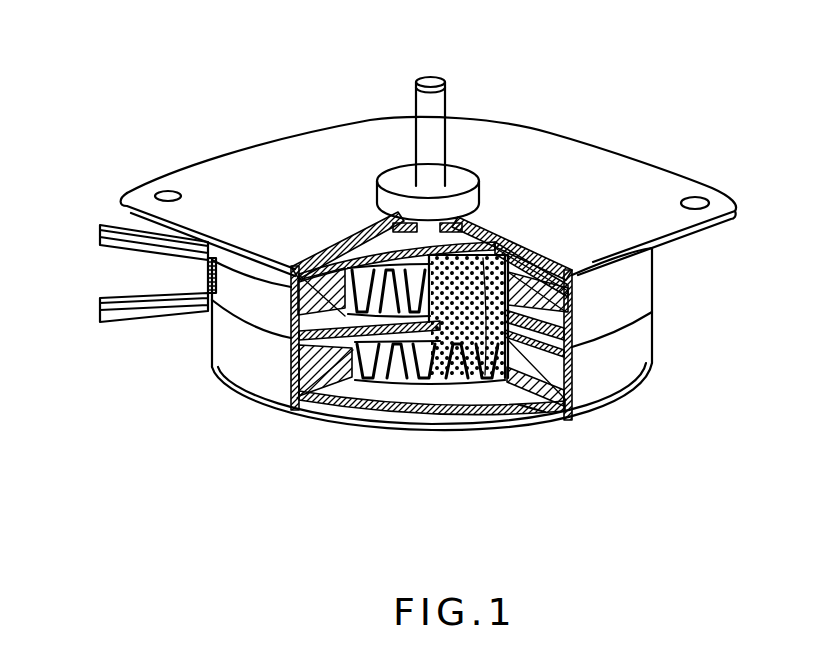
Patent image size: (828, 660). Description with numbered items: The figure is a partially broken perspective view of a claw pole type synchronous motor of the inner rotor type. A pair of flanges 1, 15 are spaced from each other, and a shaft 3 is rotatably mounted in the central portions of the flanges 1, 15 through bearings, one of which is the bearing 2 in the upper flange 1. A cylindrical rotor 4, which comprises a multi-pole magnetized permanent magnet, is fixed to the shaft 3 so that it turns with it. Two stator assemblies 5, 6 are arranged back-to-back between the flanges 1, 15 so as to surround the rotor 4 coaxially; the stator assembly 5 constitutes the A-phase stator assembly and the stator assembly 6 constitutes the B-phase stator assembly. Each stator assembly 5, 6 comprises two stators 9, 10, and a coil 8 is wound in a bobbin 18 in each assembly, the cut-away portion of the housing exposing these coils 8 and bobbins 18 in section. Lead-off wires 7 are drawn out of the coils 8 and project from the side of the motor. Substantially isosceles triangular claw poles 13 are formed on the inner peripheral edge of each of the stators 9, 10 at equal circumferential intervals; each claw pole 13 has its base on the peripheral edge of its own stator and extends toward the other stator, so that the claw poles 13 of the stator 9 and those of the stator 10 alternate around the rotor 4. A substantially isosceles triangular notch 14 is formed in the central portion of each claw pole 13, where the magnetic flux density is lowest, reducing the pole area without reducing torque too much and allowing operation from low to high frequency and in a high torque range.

The flange 1 is at (565, 148).
The bearing 2 is at (460, 178).
The shaft 3 is at (433, 76).
The rotor 4 is at (468, 285).
The stator assembly 5 is at (633, 280).
The stator assembly 6 is at (637, 343).
The lead-off wires 7 is at (100, 317).
The coil 8 is at (307, 262).
The stator 9 is at (362, 262).
The stator 10 is at (343, 273).
The claw pole 13 is at (478, 380).
The notch 14 is at (390, 400).
The flange 15 is at (250, 400).
The bobbin 18 is at (537, 413).